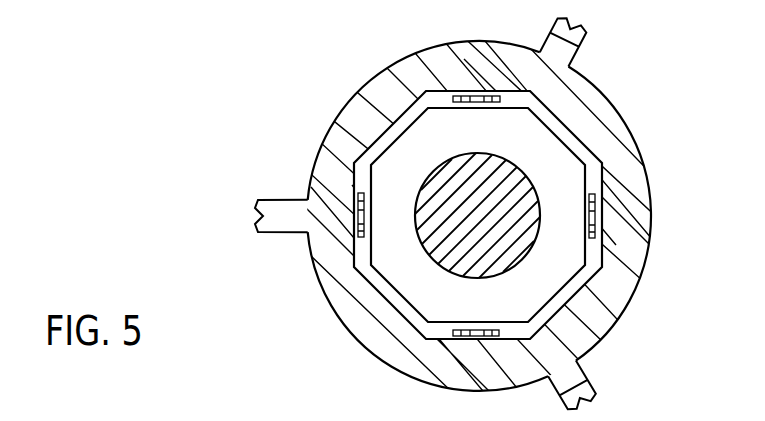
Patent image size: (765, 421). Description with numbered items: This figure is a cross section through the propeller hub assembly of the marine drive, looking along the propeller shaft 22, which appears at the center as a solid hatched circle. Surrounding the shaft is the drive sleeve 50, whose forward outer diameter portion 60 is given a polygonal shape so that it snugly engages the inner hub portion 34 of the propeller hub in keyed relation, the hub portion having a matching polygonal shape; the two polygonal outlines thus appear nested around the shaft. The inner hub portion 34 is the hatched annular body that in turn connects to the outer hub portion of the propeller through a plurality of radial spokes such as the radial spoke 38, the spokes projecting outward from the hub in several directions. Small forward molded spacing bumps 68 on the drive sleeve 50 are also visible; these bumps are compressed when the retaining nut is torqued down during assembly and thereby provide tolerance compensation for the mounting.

The propeller shaft 22 is at (527, 242).
The inner hub portion 34 is at (604, 100).
The radial spoke 38 is at (576, 44).
The drive sleeve 50 is at (612, 320).
The forward outer diameter portion 60 is at (512, 95).
The forward molded spacing bumps 68 is at (596, 208).